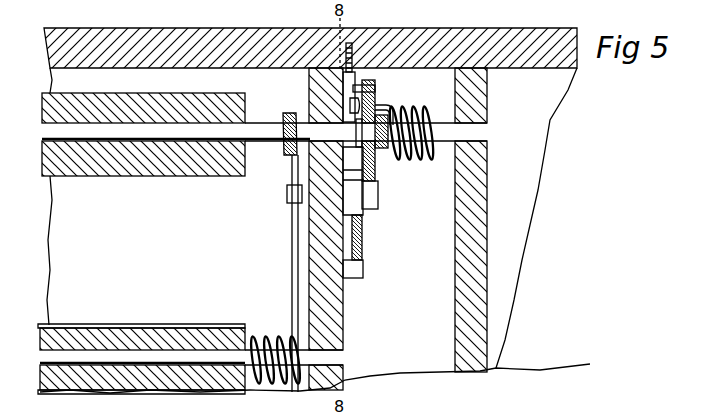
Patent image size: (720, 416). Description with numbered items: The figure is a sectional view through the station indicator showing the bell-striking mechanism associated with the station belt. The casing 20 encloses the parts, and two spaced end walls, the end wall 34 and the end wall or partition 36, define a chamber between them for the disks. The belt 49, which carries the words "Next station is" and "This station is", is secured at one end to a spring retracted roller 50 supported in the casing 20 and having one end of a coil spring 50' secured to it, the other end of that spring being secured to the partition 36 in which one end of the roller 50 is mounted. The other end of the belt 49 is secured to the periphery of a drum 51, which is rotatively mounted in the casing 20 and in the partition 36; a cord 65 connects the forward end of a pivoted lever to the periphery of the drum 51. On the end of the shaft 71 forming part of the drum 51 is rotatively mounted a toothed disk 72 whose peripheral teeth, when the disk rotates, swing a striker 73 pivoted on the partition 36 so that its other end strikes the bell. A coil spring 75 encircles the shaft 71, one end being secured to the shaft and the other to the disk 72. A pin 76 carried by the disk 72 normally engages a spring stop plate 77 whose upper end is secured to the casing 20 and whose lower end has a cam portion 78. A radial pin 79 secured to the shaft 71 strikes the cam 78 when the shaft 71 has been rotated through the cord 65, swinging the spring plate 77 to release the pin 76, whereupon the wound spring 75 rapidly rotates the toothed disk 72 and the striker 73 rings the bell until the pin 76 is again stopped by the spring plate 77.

The casing 20 is at (446, 36).
The end wall 34 is at (458, 320).
The end wall 36 is at (343, 332).
The belt 49 is at (150, 325).
The spring retracted roller 50 is at (174, 341).
The coil spring 50' is at (275, 343).
The drum 51 is at (220, 162).
The cord 65 is at (292, 257).
The shaft 71 is at (488, 132).
The disk 72 is at (377, 183).
The striker 73 is at (366, 217).
The coil spring 75 is at (412, 106).
The pin 76 is at (376, 88).
The spring stop plate 77 is at (309, 78).
The cam portion 78 is at (348, 107).
The radial pin 79 is at (335, 122).